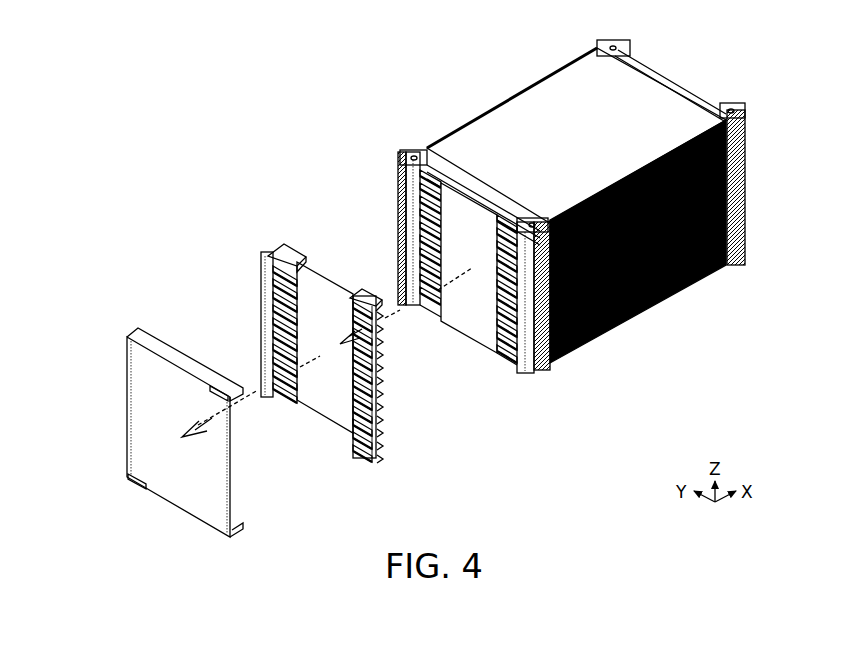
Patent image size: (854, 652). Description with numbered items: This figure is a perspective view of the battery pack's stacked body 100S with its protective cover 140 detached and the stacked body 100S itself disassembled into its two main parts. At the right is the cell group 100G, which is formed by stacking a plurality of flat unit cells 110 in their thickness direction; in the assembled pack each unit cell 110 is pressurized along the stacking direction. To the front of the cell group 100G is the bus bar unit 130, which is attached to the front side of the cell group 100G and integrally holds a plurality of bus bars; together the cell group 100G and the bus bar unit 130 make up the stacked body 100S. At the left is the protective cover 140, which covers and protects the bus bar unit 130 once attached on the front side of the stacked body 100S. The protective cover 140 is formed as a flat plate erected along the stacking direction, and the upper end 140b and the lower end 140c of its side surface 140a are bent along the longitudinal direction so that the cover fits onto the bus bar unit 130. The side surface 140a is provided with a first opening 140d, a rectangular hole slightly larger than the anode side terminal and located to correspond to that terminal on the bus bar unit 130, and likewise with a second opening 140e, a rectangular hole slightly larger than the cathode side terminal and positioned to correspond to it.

The stacked body 100S is at (540, 24).
The cell group 100G is at (442, 128).
The unit cell 110 is at (641, 92).
The bus bar unit 130 is at (249, 246).
The protective cover 140 is at (127, 337).
The side surface 140a is at (225, 464).
The upper end 140b is at (183, 352).
The lower end 140c is at (236, 530).
The first opening 140d is at (214, 393).
The second opening 140e is at (135, 486).